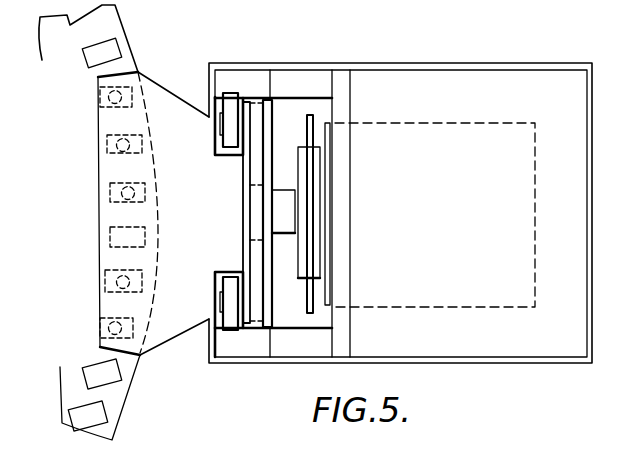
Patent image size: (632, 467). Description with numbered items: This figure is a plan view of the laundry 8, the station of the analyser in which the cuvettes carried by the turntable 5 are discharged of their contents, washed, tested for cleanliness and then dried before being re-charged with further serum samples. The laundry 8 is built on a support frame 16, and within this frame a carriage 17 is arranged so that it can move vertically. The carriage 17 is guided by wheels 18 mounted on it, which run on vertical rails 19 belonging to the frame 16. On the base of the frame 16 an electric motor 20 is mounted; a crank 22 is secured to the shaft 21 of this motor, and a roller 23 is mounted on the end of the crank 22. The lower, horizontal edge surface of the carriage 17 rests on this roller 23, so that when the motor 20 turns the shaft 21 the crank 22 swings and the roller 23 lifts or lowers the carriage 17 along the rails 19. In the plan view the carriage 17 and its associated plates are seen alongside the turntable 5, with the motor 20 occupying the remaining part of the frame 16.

The turntable 5 is at (118, 397).
The laundry 8 is at (291, 62).
The support frame 16 is at (259, 63).
The carriage 17 is at (268, 147).
The wheels 18 is at (231, 147).
The vertical rails 19 is at (215, 77).
The electric motor 20 is at (488, 308).
The shaft 21 is at (325, 213).
The crank 22 is at (287, 196).
The roller 23 is at (257, 231).